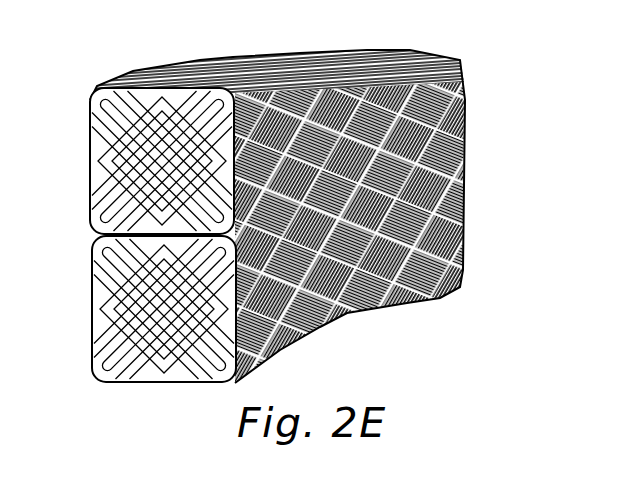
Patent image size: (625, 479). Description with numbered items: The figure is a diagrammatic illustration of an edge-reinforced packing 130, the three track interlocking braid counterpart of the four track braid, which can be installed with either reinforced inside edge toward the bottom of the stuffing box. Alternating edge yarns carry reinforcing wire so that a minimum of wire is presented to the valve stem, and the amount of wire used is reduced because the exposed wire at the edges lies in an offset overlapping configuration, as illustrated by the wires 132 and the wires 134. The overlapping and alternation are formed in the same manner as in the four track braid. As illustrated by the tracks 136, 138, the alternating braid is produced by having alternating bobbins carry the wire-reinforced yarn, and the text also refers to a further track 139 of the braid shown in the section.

The packing 130 is at (474, 220).
The wires 132 is at (254, 60).
The wires 134 is at (428, 183).
The track 136 is at (107, 200).
The track 138 is at (90, 126).
The core yarns 139 is at (100, 157).